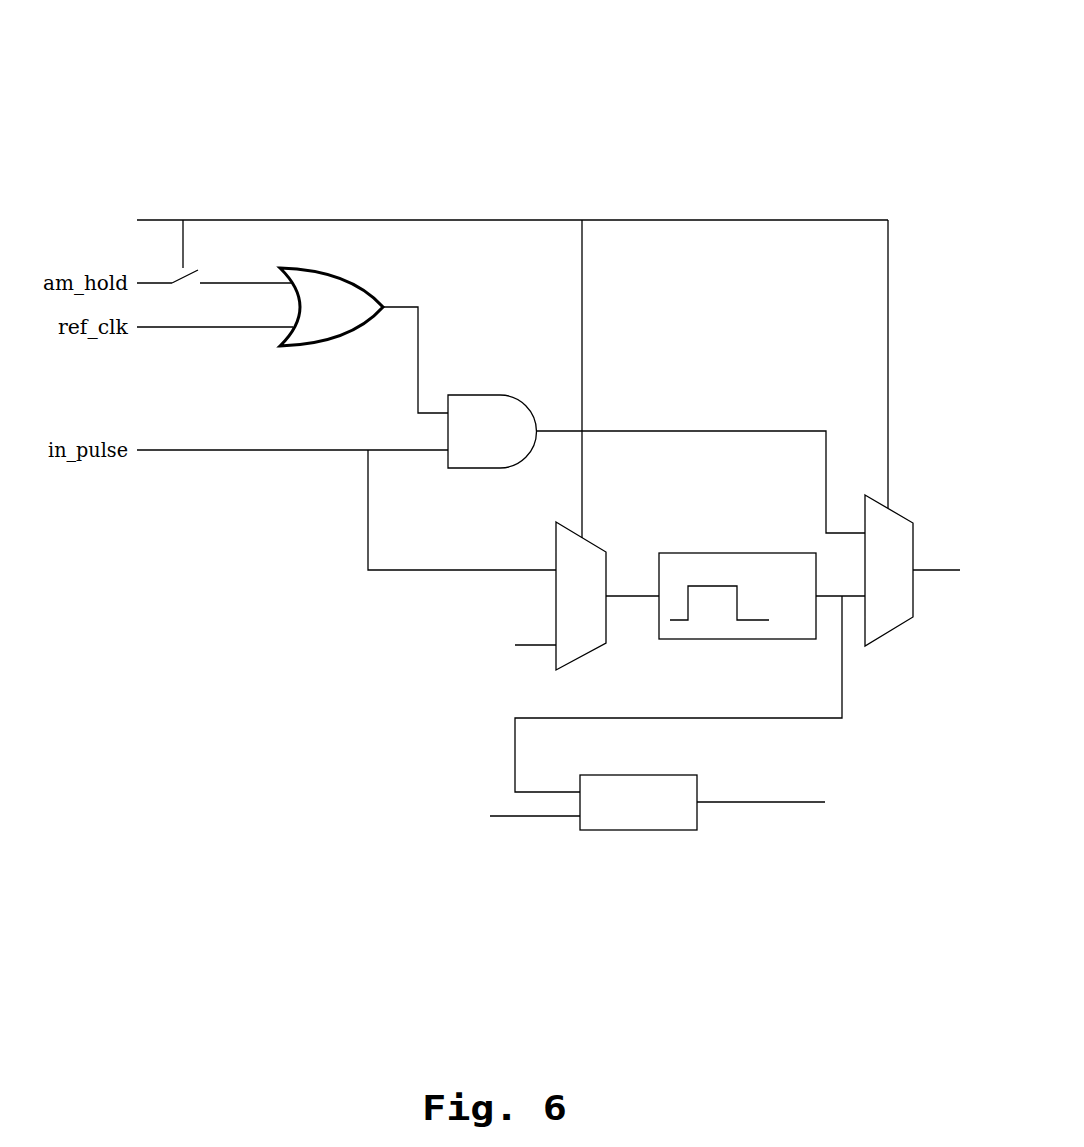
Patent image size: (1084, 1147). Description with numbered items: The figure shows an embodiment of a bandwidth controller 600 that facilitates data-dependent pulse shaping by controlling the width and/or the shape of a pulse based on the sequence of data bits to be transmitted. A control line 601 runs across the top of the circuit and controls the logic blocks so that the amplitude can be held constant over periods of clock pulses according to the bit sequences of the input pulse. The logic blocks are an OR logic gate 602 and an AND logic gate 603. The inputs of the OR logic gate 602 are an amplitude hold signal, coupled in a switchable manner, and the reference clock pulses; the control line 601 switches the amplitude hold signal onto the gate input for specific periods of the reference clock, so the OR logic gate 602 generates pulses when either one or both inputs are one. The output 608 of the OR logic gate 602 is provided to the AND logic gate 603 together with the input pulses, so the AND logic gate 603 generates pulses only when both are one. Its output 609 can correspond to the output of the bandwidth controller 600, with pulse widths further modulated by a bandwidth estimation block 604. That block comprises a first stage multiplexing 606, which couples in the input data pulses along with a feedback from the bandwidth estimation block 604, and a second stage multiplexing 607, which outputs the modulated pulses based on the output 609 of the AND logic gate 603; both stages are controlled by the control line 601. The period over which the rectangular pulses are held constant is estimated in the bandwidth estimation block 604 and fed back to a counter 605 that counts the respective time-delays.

The bandwidth controller 600 is at (236, 111).
The control line 601 is at (370, 218).
The OR logic gate 602 is at (327, 323).
The AND logic gate 603 is at (460, 407).
The bandwidth estimation block 604 is at (683, 567).
The counter 605 is at (632, 823).
The first stage multiplexing 606 is at (583, 550).
The second stage multiplexing 607 is at (870, 618).
The output of the OR logic gate 608 is at (418, 338).
The output of the AND logic gate 609 is at (612, 430).